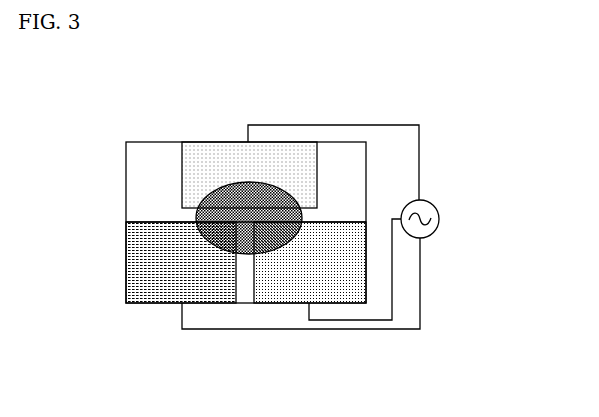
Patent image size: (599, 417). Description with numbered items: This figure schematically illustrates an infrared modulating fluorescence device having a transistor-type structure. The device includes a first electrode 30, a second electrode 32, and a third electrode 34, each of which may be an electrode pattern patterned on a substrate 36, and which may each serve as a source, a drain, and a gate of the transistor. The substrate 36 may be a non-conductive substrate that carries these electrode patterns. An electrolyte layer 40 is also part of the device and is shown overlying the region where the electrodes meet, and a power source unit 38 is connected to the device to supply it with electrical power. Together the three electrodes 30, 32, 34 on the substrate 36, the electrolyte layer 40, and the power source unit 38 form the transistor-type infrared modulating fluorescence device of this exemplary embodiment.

The first electrode 30 is at (209, 160).
The second electrode 32 is at (135, 255).
The third electrode 34 is at (334, 293).
The substrate 36 is at (344, 199).
The power source unit 38 is at (450, 218).
The electrolyte layer 40 is at (270, 204).